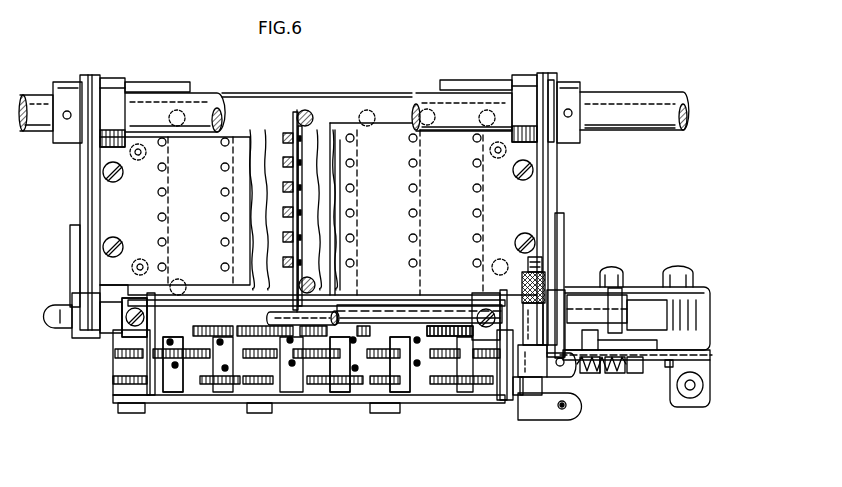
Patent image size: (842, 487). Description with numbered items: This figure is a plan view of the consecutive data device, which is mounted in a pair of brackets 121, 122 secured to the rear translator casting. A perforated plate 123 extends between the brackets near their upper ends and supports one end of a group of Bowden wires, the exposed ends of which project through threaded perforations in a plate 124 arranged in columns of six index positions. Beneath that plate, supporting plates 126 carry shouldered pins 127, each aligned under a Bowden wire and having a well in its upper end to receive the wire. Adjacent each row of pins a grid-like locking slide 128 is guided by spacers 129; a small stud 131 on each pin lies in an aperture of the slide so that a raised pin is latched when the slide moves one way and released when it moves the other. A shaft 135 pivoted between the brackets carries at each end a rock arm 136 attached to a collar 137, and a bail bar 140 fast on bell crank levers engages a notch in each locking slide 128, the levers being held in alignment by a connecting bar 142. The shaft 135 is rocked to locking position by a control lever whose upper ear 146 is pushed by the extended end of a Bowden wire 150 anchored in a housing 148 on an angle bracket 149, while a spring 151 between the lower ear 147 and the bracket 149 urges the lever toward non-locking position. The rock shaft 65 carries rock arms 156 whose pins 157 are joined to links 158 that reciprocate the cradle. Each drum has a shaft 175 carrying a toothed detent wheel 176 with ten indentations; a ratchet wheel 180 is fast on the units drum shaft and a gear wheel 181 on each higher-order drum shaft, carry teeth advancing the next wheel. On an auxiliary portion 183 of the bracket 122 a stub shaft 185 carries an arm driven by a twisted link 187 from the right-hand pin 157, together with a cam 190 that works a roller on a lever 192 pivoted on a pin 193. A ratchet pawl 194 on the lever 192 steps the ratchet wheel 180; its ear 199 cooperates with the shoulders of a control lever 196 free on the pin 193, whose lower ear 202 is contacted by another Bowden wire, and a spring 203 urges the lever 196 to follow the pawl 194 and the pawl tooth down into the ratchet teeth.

The rock shaft 65 is at (647, 97).
The bracket 121 is at (95, 182).
The bracket 122 is at (543, 203).
The perforated plate 123 is at (392, 130).
The plate 124 is at (335, 161).
The supporting plate 126 is at (326, 207).
The shouldered pin 127 is at (285, 132).
The locking slide 128 is at (296, 112).
The spacer 129 is at (308, 111).
The stud 131 is at (301, 138).
The shaft 135 is at (400, 308).
The rock arm 136 is at (506, 400).
The collar 137 is at (128, 335).
The bail bar 140 is at (290, 307).
The connecting bar 142 is at (178, 380).
The ear 146 is at (530, 396).
The ear 147 is at (570, 418).
The housing 148 is at (535, 372).
The angle bracket 149 is at (530, 192).
The Bowden wire 150 is at (543, 271).
The spring 151 is at (574, 398).
The rock arm 156 is at (553, 81).
The pin 157 is at (616, 290).
The link 158 is at (72, 262).
The shaft 175 is at (418, 384).
The toothed detent wheel 176 is at (333, 384).
The ratchet wheel 180 is at (468, 323).
The gear wheel 181 is at (214, 318).
The auxiliary portion 183 is at (648, 295).
The stub shaft 185 is at (700, 335).
The twisted link 187 is at (626, 290).
The cam 190 is at (712, 355).
The lever 192 is at (700, 340).
The pin 193 is at (614, 371).
The ratchet pawl 194 is at (552, 310).
The control lever 196 is at (638, 368).
The ear 199 is at (584, 366).
The ear 202 is at (705, 408).
The spring 203 is at (618, 372).